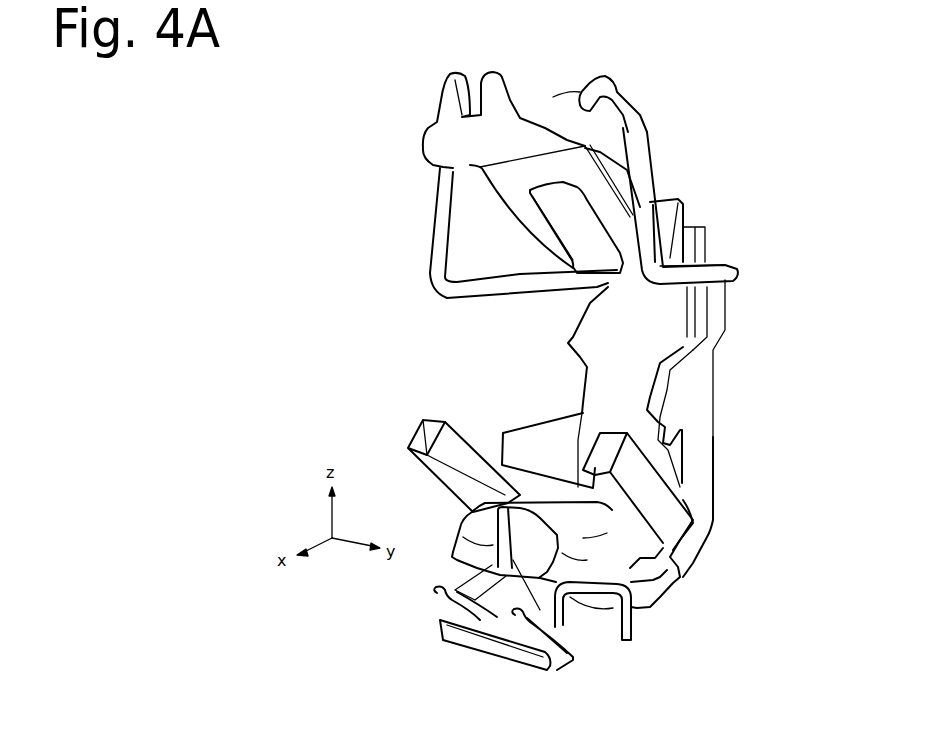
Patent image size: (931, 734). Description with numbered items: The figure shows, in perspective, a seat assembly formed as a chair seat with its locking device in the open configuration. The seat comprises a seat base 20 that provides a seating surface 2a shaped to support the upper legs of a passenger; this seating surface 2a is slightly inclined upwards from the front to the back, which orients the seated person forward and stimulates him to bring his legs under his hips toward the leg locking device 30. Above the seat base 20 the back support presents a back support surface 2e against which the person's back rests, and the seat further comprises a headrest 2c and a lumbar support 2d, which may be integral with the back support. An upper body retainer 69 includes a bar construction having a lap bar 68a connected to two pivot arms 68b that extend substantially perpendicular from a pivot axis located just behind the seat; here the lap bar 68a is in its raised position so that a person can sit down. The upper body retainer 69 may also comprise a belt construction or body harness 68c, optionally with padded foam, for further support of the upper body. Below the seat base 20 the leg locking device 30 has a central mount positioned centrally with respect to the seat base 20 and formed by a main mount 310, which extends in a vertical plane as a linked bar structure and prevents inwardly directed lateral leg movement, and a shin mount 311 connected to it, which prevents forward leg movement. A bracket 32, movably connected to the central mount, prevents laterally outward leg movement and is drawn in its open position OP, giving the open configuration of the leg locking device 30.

The lap bar 68a is at (546, 93).
The pivot arms 68b is at (717, 273).
The body harness 68c is at (647, 130).
The upper body retainer 69 is at (655, 167).
The headrest 2c is at (663, 212).
The back support surface 2e is at (635, 350).
The lumbar support 2d is at (677, 403).
The seating surface 2a is at (562, 529).
The seat base 20 is at (673, 578).
The bracket 32 is at (630, 620).
The leg locking device 30 is at (543, 650).
The main mount 310 is at (503, 623).
The shin mount 311 is at (552, 662).
The open position OP is at (791, 480).